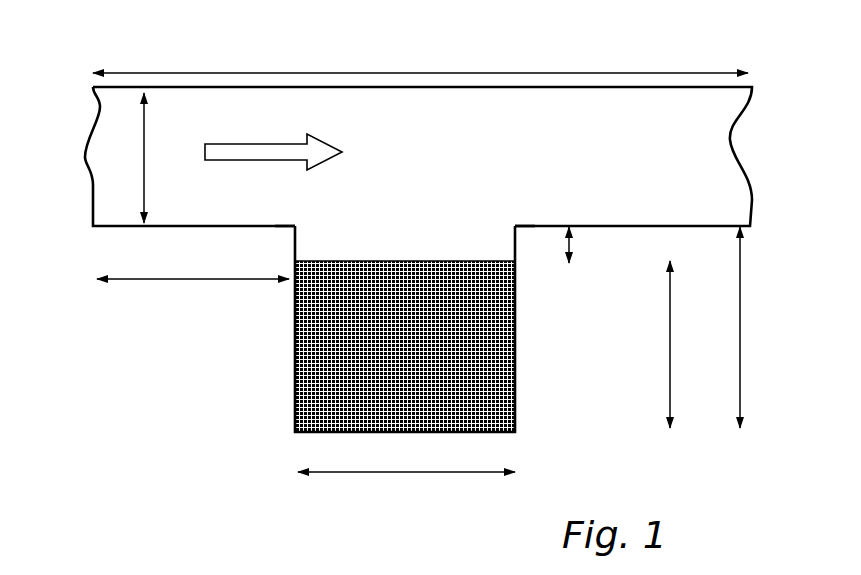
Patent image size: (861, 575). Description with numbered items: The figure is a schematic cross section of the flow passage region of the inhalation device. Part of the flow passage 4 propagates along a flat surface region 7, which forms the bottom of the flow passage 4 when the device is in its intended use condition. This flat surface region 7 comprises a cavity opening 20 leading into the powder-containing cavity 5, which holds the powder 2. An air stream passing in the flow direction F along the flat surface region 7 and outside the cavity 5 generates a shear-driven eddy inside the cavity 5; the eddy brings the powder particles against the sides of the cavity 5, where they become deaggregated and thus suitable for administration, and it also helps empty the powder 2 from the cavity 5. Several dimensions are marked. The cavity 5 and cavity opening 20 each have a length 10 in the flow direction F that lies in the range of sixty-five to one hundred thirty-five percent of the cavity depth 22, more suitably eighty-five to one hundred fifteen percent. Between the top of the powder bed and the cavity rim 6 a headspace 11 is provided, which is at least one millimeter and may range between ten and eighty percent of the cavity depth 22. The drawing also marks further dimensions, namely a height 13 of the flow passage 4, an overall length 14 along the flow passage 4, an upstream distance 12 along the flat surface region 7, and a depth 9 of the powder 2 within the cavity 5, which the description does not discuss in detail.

The powder 2 is at (498, 368).
The flow passage 4 is at (541, 154).
The powder-containing cavity 5 is at (515, 280).
The cavity rim 6 is at (513, 226).
The flat surface region 7 is at (200, 226).
The filler depth 9 is at (672, 322).
The length 10 is at (410, 474).
The headspace 11 is at (571, 243).
The upstream wall length 12 is at (198, 281).
The channel height 13 is at (143, 157).
The total channel length 14 is at (404, 72).
The cavity opening 20 is at (413, 221).
The cavity depth 22 is at (742, 322).
The flow direction F is at (273, 140).